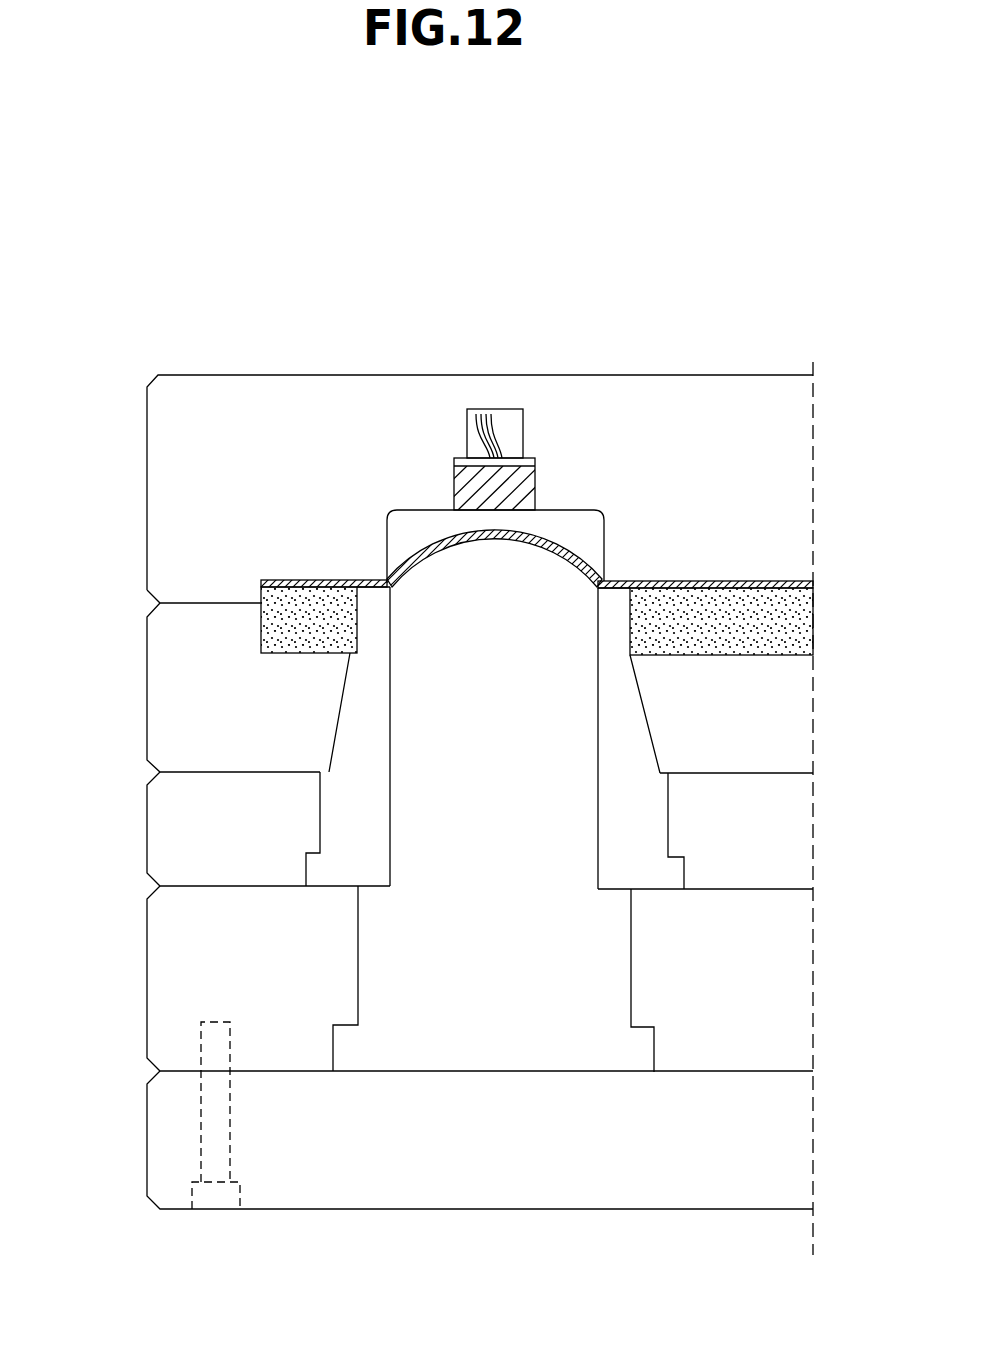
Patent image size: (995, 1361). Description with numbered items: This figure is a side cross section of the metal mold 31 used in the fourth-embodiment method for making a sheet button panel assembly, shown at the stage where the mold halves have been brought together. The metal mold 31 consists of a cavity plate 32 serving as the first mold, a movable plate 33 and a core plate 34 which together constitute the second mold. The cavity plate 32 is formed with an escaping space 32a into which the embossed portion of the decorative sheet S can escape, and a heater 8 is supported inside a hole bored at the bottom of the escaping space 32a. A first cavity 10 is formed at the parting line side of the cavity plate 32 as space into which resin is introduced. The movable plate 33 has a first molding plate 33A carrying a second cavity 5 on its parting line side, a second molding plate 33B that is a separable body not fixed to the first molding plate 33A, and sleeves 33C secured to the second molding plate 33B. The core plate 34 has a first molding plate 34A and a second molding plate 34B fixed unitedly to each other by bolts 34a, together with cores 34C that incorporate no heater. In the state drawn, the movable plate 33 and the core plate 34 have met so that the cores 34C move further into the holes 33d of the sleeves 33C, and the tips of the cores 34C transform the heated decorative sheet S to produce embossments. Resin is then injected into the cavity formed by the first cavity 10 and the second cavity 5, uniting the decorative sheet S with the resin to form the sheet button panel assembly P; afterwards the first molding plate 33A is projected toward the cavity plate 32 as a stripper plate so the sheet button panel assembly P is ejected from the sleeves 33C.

The metal mold 31 is at (214, 354).
The cavity plate 32 is at (147, 385).
The escaping space 32a is at (392, 525).
The heater 8 is at (535, 480).
The decorative sheet S is at (780, 585).
The second cavity 5 is at (320, 613).
The first cavity 10 is at (700, 610).
The sheet button panel assembly P is at (815, 622).
The movable plate 33 is at (147, 717).
The first molding plate 33A is at (147, 647).
The second molding plate 33B is at (147, 814).
The sleeve 33C is at (668, 818).
The hole 33d is at (596, 705).
The core plate 34 is at (147, 1100).
The first molding plate 34A is at (147, 945).
The second molding plate 34B is at (147, 1153).
The core 34C is at (631, 964).
The bolt 34a is at (228, 1209).